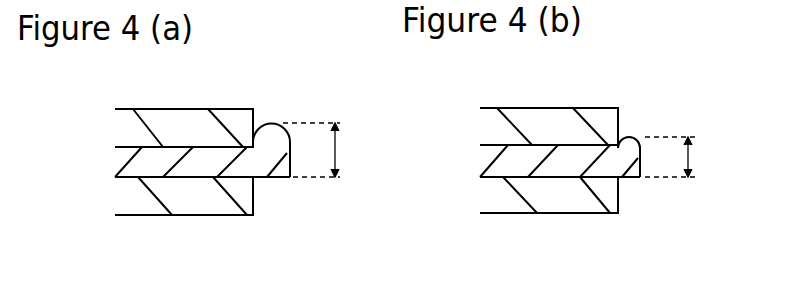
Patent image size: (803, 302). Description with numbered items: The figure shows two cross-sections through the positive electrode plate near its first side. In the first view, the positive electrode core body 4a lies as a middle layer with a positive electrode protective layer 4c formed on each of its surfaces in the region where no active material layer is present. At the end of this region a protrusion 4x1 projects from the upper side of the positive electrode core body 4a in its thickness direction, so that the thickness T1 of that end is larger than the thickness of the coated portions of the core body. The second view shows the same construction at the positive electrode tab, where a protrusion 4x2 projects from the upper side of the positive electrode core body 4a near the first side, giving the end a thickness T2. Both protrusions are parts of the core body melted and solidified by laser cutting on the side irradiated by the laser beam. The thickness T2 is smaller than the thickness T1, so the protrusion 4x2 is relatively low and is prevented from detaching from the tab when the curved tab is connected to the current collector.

In FIG. 4A, the positive electrode protective layer 4c is at (190, 125).
In FIG. 4B, the positive electrode protective layer 4c is at (555, 125).
In FIG. 4A, the positive electrode core body 4a is at (190, 163).
In FIG. 4B, the positive electrode core body 4a is at (553, 162).
In FIG. 4A, the protrusion 4x1 is at (273, 133).
In FIG. 4B, the protrusion 4x2 is at (633, 140).
In FIG. 4A, the thickness T1 is at (334, 150).
In FIG. 4B, the thickness T2 is at (696, 158).